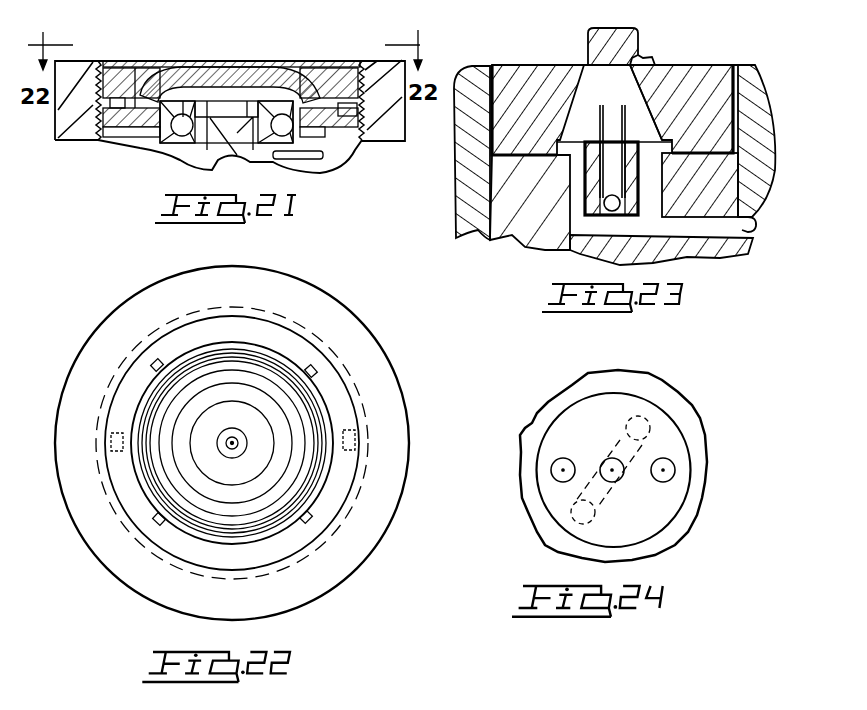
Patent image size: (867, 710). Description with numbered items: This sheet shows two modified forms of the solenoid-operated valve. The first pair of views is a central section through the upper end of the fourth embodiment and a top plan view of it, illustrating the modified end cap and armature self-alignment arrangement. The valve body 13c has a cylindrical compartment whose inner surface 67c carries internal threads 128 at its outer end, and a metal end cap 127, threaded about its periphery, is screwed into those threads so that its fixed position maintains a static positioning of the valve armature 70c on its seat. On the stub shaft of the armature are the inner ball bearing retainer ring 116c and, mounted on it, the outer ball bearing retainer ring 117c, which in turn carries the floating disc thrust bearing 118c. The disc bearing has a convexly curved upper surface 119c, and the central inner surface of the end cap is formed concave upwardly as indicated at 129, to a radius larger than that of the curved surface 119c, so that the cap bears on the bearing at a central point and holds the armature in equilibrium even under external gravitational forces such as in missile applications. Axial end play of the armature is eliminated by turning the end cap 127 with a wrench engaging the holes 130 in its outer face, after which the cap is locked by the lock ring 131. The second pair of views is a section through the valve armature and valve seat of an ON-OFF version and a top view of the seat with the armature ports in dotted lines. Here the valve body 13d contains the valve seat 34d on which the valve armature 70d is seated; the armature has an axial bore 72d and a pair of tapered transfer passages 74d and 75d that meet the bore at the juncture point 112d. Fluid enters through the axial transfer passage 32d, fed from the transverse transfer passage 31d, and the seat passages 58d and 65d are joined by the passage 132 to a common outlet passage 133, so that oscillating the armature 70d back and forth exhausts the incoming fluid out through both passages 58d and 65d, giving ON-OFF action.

In FIG. 21, the valve body 13c is at (386, 142).
In FIG. 22, the valve body 13c is at (346, 292).
In FIG. 21, the compartment inner surface 67c is at (110, 140).
In FIG. 21, the end cap 127 is at (100, 118).
In FIG. 22, the end cap 127 is at (283, 400).
In FIG. 21, the internal threads 128 is at (118, 61).
In FIG. 21, the first or inner ball bearing retainer ring 116c is at (206, 67).
In FIG. 21, the disc thrust bearing 118c is at (222, 87).
In FIG. 21, the concave inner surface 129 is at (190, 105).
In FIG. 21, the curved upper surface 119c is at (280, 100).
In FIG. 21, the second or outer ball bearing retainer ring 117c is at (303, 103).
In FIG. 21, the valve armature 70c is at (282, 163).
In FIG. 22, the holes 130 is at (111, 447).
In FIG. 22, the lock ring 131 is at (293, 548).
In FIG. 23, the valve body 13d is at (708, 255).
In FIG. 24, the valve body 13d is at (704, 440).
In FIG. 23, the juncture point 112d is at (588, 64).
In FIG. 23, the valve armature 70d is at (684, 78).
In FIG. 23, the transfer passage 74d is at (580, 104).
In FIG. 24, the transfer passage 74d is at (598, 521).
In FIG. 23, the axial bore 72d is at (623, 112).
In FIG. 23, the transfer passage 75d is at (648, 125).
In FIG. 24, the transfer passage 75d is at (627, 426).
In FIG. 23, the axial transfer passage 32d is at (618, 162).
In FIG. 24, the axial transfer passage 32d is at (620, 478).
In FIG. 23, the passage 58d is at (660, 176).
In FIG. 24, the passage 58d is at (674, 470).
In FIG. 23, the passage 65d is at (568, 180).
In FIG. 24, the passage 65d is at (555, 470).
In FIG. 23, the transverse transfer passage 31d is at (616, 216).
In FIG. 23, the passage 132 is at (641, 238).
In FIG. 23, the common outlet passage 133 is at (753, 226).
In FIG. 24, the valve seat 34d is at (672, 408).